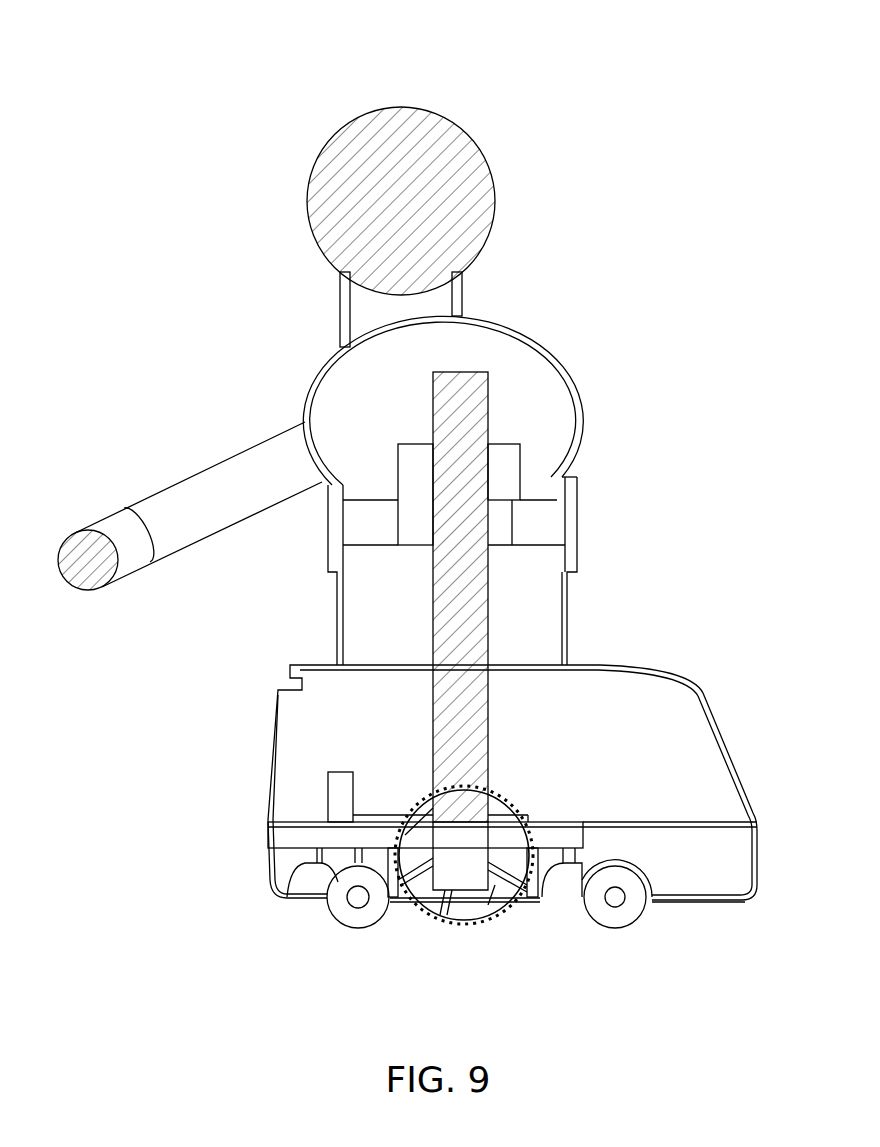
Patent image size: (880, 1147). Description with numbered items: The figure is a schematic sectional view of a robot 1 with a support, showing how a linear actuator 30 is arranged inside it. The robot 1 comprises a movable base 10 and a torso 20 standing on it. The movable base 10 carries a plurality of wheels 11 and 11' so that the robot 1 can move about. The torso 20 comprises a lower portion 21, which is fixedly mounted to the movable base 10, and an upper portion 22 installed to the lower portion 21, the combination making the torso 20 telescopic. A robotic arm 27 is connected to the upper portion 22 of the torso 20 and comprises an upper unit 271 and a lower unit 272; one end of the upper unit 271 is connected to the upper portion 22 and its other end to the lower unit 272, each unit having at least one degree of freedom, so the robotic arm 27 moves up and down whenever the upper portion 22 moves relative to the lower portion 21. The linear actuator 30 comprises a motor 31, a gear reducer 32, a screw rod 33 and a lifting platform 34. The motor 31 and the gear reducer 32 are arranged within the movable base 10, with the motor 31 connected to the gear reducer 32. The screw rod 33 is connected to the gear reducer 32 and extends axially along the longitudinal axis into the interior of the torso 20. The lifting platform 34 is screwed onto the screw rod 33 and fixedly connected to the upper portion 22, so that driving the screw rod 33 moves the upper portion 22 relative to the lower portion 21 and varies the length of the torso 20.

The robot 1 is at (656, 146).
The torso 20 is at (604, 363).
The upper portion 22 is at (518, 362).
The lower portion 21 is at (555, 615).
The lifting platform 34 is at (510, 466).
The screw rod 33 is at (480, 723).
The robotic arm 27 is at (198, 436).
The upper unit 271 is at (200, 497).
The lower unit 272 is at (120, 530).
The movable base 10 is at (735, 868).
The linear actuator 30 is at (338, 740).
The motor 31 is at (333, 784).
The gear reducer 32 is at (428, 842).
The wheel 11 is at (471, 885).
The wheel 11' is at (496, 928).